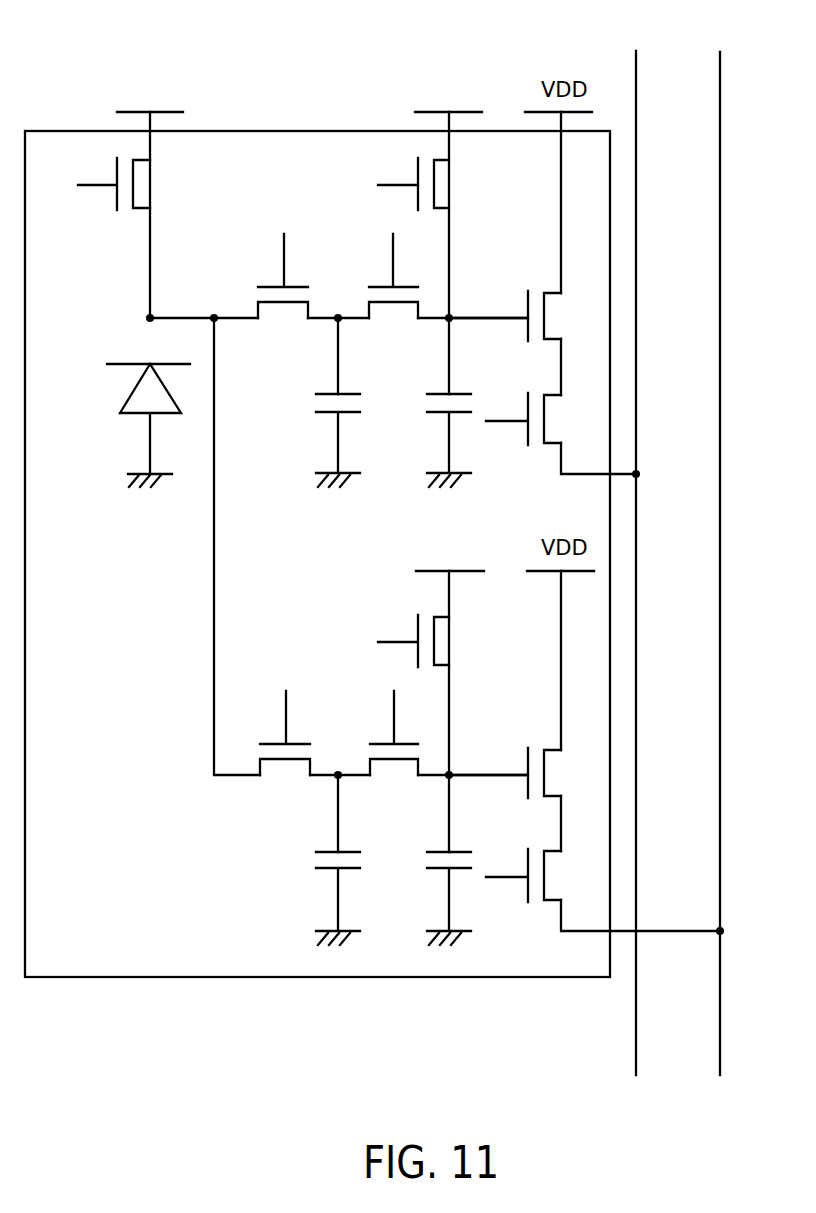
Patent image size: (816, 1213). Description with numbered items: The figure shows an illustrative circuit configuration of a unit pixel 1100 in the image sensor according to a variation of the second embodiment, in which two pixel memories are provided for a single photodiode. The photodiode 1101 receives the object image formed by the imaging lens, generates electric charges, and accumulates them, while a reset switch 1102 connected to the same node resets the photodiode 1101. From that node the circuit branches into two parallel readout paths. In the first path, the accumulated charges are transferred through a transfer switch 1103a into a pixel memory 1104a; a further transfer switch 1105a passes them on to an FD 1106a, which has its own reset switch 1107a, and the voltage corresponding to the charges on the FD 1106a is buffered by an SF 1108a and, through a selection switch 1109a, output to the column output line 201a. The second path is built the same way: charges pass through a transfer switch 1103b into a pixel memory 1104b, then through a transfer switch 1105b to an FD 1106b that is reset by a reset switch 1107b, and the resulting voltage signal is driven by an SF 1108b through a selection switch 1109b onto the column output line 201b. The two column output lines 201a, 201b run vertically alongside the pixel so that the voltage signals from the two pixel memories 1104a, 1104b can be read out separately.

The unit pixel 1100 is at (40, 131).
The photodiode 1101 is at (129, 426).
The reset switch 1102 is at (116, 161).
The transfer switch 1103a is at (256, 276).
The pixel memory 1104a is at (311, 440).
The transfer switch 1105a is at (365, 276).
The FD 1106a is at (424, 440).
The reset switch 1107a is at (406, 161).
The SF 1108a is at (505, 301).
The selection switch 1109a is at (519, 432).
The transfer switch 1103b is at (275, 719).
The pixel memory 1104b is at (310, 898).
The transfer switch 1105b is at (367, 733).
The FD 1106b is at (424, 898).
The reset switch 1107b is at (407, 619).
The SF 1108b is at (505, 756).
The selection switch 1109b is at (520, 887).
The column output line 201a is at (624, 546).
The column output line 201b is at (716, 546).